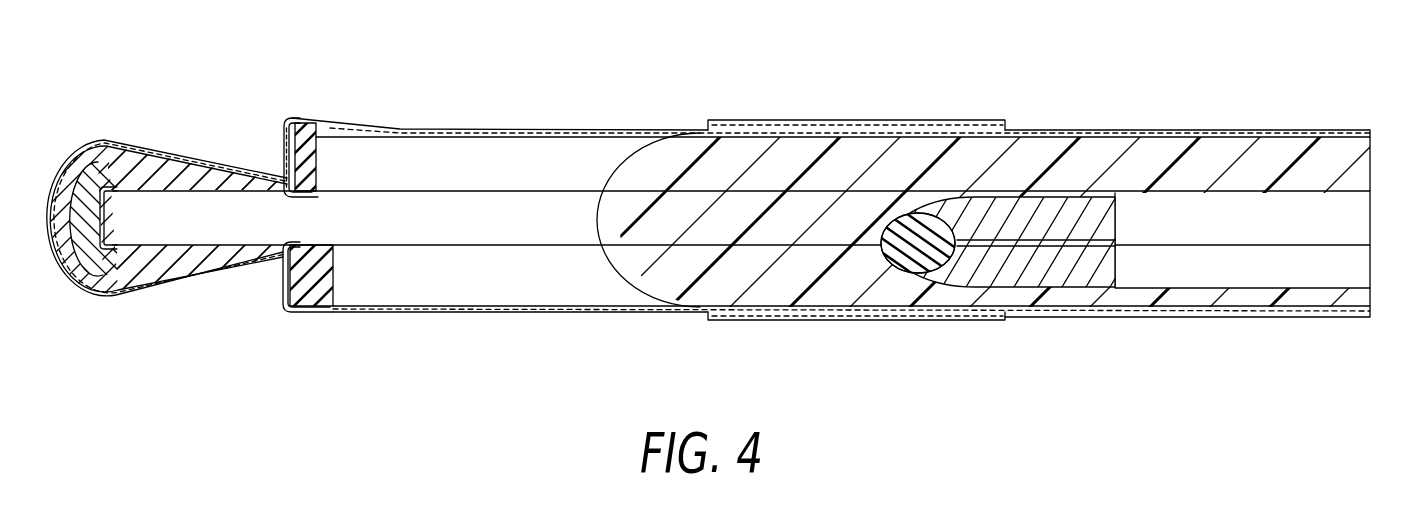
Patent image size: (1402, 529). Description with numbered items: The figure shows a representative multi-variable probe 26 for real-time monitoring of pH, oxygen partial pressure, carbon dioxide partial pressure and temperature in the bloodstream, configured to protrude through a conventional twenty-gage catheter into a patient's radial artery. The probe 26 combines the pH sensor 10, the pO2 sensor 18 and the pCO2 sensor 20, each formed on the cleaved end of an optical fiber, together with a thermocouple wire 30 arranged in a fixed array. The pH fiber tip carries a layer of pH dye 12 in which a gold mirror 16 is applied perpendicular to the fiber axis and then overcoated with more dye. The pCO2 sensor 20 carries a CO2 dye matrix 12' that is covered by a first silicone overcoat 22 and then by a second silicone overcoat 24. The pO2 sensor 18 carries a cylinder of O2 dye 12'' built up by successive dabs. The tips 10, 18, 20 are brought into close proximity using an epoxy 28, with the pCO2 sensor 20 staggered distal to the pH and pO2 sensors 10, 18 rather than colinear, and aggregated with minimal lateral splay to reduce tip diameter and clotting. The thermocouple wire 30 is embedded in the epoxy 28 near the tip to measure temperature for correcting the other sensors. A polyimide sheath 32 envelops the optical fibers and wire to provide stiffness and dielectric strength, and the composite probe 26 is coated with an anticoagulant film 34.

The pH sensor 10 is at (290, 115).
The pH dye layer 12 is at (318, 127).
The CO2 dye matrix 12' is at (127, 269).
The O2 dye cylinder 12'' is at (324, 305).
The gold mirror 16 is at (288, 157).
The pO2 sensor 18 is at (302, 320).
The pCO2 sensor 20 is at (97, 303).
The overcoat of SC-32 22 is at (148, 260).
The overcoat of SC-35 24 is at (200, 262).
The multi-variable probe 26 is at (78, 106).
The epoxy 28 is at (672, 277).
The thermocouple wire 30 is at (1022, 268).
The polyimide sheath 32 is at (737, 313).
The anticoagulant film 34 is at (462, 316).